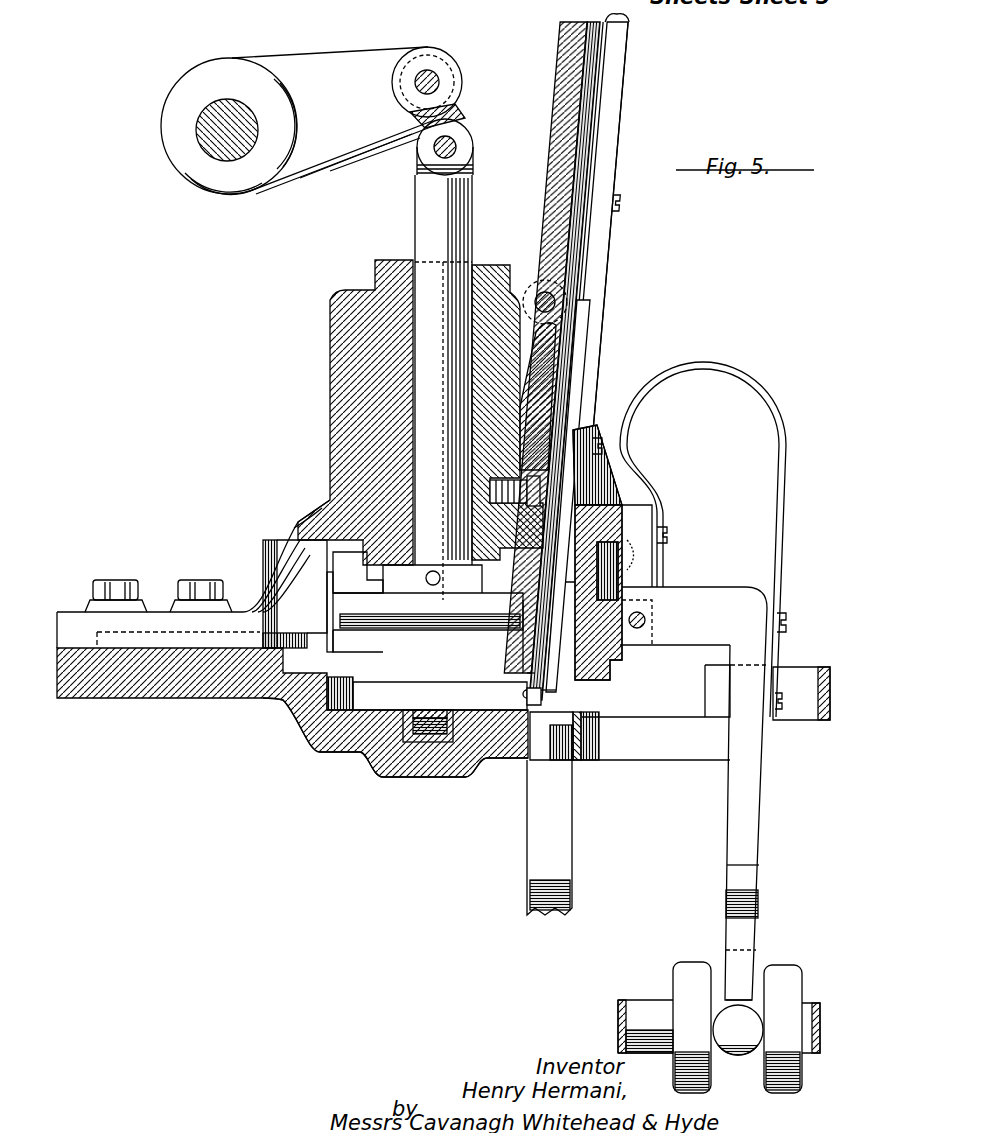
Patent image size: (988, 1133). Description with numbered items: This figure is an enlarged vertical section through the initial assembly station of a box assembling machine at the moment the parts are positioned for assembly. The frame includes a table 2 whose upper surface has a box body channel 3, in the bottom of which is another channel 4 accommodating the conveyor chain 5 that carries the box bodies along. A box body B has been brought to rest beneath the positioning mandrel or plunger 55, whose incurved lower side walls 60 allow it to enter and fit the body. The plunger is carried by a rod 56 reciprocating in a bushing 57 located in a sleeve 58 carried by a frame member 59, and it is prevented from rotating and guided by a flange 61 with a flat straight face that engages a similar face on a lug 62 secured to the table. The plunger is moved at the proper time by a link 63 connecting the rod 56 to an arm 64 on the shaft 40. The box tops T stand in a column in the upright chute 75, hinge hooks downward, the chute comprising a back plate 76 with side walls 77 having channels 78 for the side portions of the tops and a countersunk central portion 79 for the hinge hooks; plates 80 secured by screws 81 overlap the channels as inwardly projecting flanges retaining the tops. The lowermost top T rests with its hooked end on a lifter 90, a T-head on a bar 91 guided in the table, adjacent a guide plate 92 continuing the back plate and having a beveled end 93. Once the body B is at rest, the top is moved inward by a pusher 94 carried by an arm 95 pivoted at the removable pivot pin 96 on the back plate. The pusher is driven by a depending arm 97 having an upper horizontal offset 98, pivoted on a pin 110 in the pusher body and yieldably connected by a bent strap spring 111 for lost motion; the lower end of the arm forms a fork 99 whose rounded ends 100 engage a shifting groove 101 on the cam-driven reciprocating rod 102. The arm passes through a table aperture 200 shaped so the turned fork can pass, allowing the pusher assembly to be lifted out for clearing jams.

The table 2 is at (145, 700).
The box body channel 3 is at (276, 703).
The channel 4 is at (358, 762).
The conveyor chain 5 is at (425, 706).
The box body B is at (300, 730).
The shaft 40 is at (195, 130).
The positioning mandrel or plunger 55 is at (399, 620).
The rod 56 is at (462, 212).
The bushing 57 is at (408, 258).
The sleeve 58 is at (343, 323).
The frame member 59 is at (120, 580).
The incurved lower side walls 60 is at (366, 625).
The flange 61 is at (330, 528).
The lug 62 is at (322, 600).
The link 63 is at (455, 120).
The arm 64 is at (345, 70).
The chute 75 is at (623, 302).
The back plate 76 is at (561, 48).
The side walls 77 is at (633, 22).
The channels 78 is at (606, 60).
The countersunk central portion 79 is at (590, 118).
The plates 80 is at (613, 118).
The screws 81 is at (638, 206).
The lifter 90 is at (530, 745).
The bar 91 is at (565, 848).
The guide plate 92 is at (525, 638).
The beveled end 93 is at (527, 665).
The pusher 94 is at (588, 567).
The arm 95 is at (600, 425).
The pivot pin 96 is at (542, 292).
The depending arm 97 is at (755, 822).
The upper horizontal offset 98 is at (726, 605).
The fork 99 is at (750, 940).
The rounded ends 100 is at (740, 1044).
The shifting groove 101 is at (715, 978).
The reciprocating rod 102 is at (640, 1015).
The pin 110 is at (647, 618).
The bent strap spring 111 is at (782, 455).
The table aperture 200 is at (665, 758).
The box top T is at (592, 310).